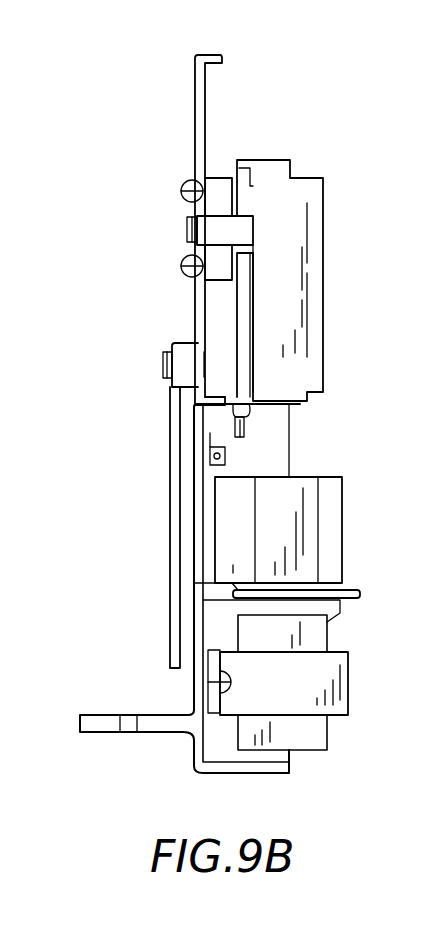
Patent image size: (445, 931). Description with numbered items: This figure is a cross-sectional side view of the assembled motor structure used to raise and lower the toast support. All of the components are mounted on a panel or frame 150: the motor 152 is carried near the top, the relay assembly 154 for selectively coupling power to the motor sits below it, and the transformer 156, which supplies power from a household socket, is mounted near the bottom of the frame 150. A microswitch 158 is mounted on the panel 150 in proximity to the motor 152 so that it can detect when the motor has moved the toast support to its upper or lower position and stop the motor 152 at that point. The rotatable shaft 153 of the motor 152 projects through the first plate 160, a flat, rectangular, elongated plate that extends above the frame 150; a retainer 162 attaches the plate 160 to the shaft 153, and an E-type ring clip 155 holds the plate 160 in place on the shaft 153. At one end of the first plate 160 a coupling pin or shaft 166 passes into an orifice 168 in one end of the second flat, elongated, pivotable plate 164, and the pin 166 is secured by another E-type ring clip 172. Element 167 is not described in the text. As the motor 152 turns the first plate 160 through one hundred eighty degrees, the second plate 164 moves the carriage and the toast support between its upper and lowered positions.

The panel 150 is at (268, 777).
The motor 152 is at (323, 309).
The rotatable shaft 153 is at (227, 233).
The relay assembly 154 is at (357, 590).
The E-type ring clip 155 is at (187, 211).
The transformer 156 is at (348, 688).
The microswitch 158 is at (220, 432).
The first plate 160 is at (205, 90).
The retainer 162 is at (212, 177).
The second plate 164 is at (175, 534).
The coupling pin 166 is at (185, 350).
The slot 167 is at (205, 350).
The orifice 168 is at (165, 367).
The E-type ring clip 172 is at (210, 386).